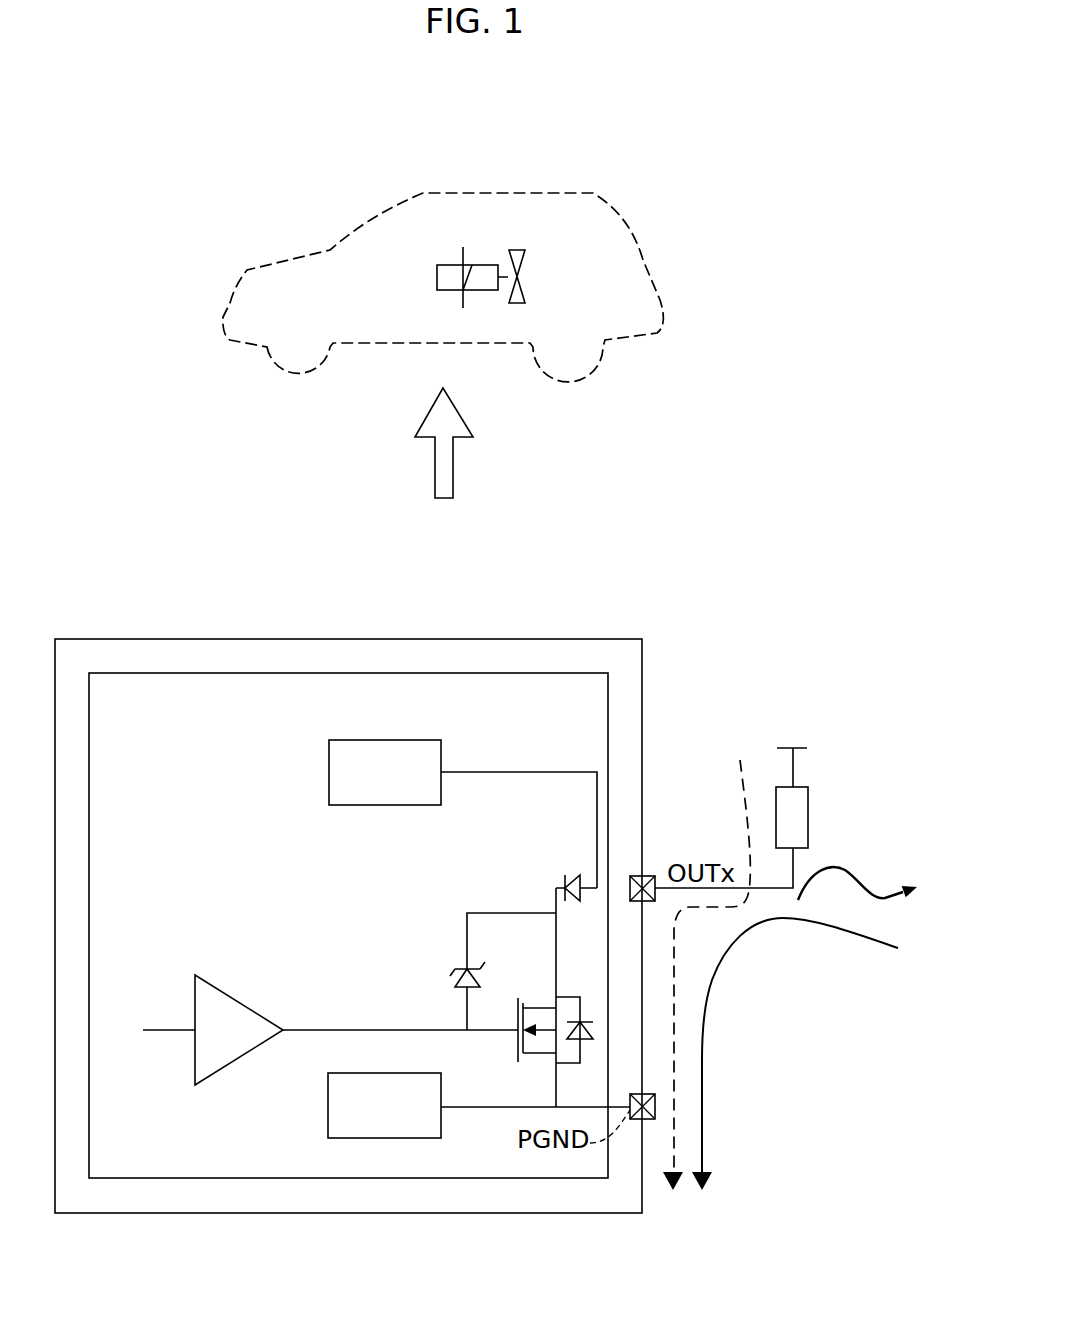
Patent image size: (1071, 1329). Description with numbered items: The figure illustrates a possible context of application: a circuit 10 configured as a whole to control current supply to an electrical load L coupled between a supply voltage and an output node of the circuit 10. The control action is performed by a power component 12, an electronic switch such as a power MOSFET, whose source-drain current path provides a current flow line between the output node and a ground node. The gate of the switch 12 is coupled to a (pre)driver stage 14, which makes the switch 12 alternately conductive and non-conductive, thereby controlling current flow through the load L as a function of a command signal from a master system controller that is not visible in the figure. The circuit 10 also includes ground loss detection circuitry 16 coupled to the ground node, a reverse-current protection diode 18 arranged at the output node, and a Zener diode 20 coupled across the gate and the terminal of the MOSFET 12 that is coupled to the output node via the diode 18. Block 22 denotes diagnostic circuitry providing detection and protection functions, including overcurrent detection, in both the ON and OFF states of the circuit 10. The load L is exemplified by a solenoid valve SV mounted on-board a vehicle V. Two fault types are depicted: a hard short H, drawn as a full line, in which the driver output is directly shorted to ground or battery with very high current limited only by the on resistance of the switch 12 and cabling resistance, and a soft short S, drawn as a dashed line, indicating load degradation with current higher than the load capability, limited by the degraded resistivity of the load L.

The circuit 10 is at (567, 648).
The power component 12 is at (531, 1065).
The (pre)driver stage 14 is at (218, 997).
The ground loss detection circuitry 16 is at (338, 1120).
The reverse-current protection diode 18 is at (570, 862).
The Zener diode 20 is at (457, 959).
The diagnostic circuitry 22 is at (340, 760).
The solenoid valve SV is at (540, 246).
The vehicle V is at (625, 258).
The electrical load L is at (803, 813).
The soft short S is at (737, 787).
The hard short H is at (840, 933).